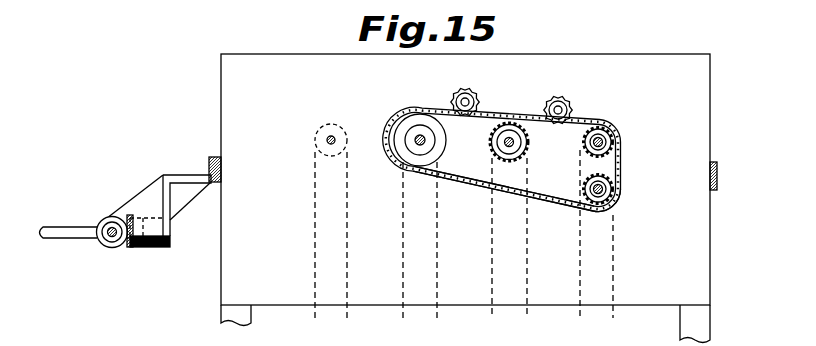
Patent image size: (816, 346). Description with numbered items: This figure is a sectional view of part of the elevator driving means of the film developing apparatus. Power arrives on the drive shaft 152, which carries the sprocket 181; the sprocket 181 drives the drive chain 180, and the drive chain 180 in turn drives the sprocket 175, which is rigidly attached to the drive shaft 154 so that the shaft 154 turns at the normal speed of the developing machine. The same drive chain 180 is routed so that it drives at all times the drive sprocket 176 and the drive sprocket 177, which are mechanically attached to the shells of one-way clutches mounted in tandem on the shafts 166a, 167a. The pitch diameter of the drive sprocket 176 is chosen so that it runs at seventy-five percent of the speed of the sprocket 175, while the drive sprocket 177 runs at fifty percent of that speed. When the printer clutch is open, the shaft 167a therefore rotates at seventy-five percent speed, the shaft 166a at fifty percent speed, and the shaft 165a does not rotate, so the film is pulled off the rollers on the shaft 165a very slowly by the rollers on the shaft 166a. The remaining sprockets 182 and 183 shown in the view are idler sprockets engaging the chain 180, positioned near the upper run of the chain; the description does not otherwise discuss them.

The drive shaft 152 is at (614, 189).
The drive shaft 154 is at (614, 142).
The shaft 165a is at (327, 140).
The shaft 166a is at (425, 140).
The shaft 167a is at (514, 146).
The sprocket 175 is at (612, 127).
The drive sprocket 176 is at (509, 123).
The drive sprocket 177 is at (414, 118).
The drive chain 180 is at (460, 184).
The sprocket 181 is at (612, 209).
The idler sprocket 182 is at (566, 99).
The idler sprocket 183 is at (470, 91).